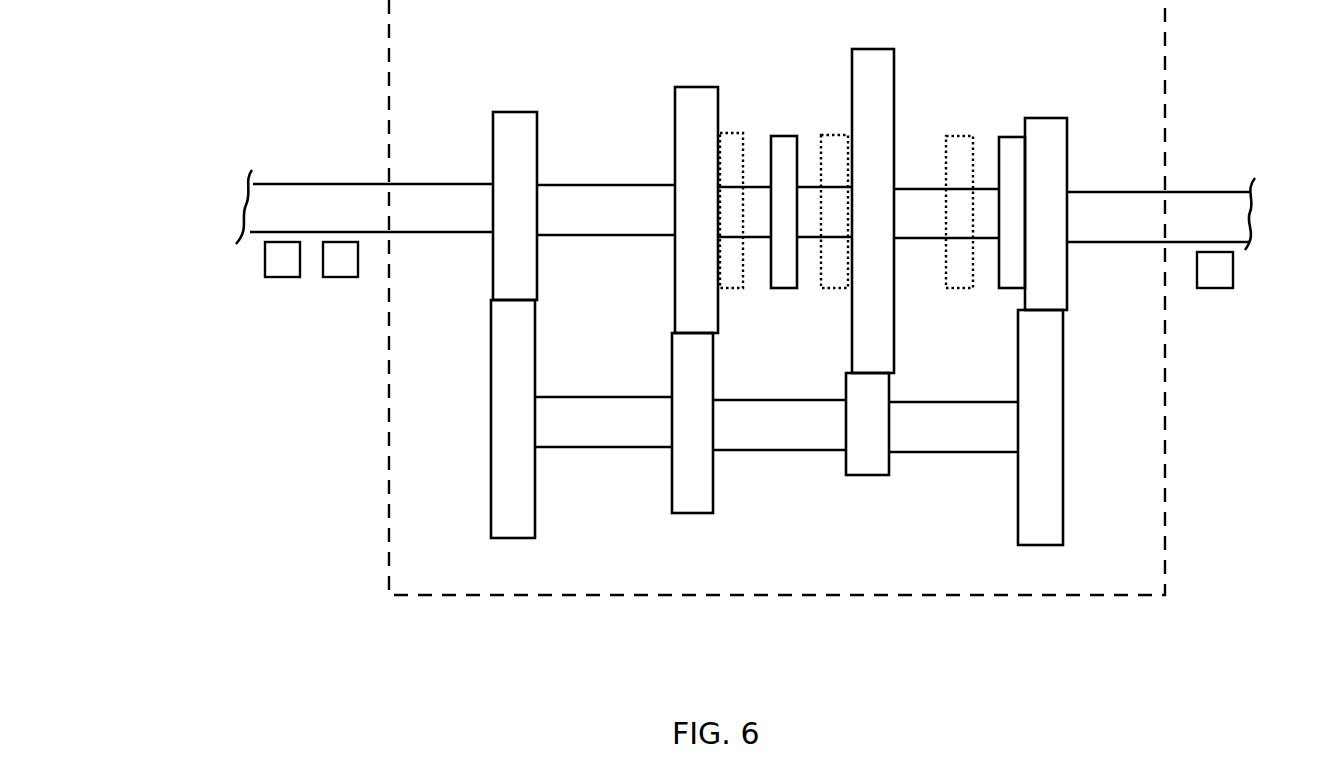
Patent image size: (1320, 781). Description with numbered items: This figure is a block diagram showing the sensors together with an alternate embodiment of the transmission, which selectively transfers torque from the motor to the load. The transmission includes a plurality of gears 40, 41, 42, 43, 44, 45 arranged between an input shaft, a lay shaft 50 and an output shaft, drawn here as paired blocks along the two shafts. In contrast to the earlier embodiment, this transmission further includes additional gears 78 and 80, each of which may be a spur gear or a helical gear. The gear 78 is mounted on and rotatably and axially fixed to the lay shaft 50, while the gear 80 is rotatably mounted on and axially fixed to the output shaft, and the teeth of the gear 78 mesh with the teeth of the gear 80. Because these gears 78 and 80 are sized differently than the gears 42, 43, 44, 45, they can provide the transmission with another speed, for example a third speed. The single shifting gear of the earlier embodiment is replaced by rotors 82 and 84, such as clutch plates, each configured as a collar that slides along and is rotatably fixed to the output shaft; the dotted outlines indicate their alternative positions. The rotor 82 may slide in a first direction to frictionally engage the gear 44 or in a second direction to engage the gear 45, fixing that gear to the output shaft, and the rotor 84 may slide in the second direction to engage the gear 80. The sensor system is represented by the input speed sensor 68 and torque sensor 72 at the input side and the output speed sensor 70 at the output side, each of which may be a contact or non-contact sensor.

The gear 40 is at (542, 148).
The gear 41 is at (490, 346).
The gear 42 is at (718, 486).
The gear 43 is at (861, 480).
The gear 44 is at (672, 183).
The gear 45 is at (898, 88).
The lay shaft 50 is at (613, 450).
The input speed sensor 68 is at (352, 272).
The output speed sensor 70 is at (1226, 283).
The torque sensor 72 is at (294, 272).
The gear 78 is at (1008, 508).
The gear 80 is at (1074, 133).
The rotor 82 is at (830, 128).
The rotor 84 is at (1007, 133).